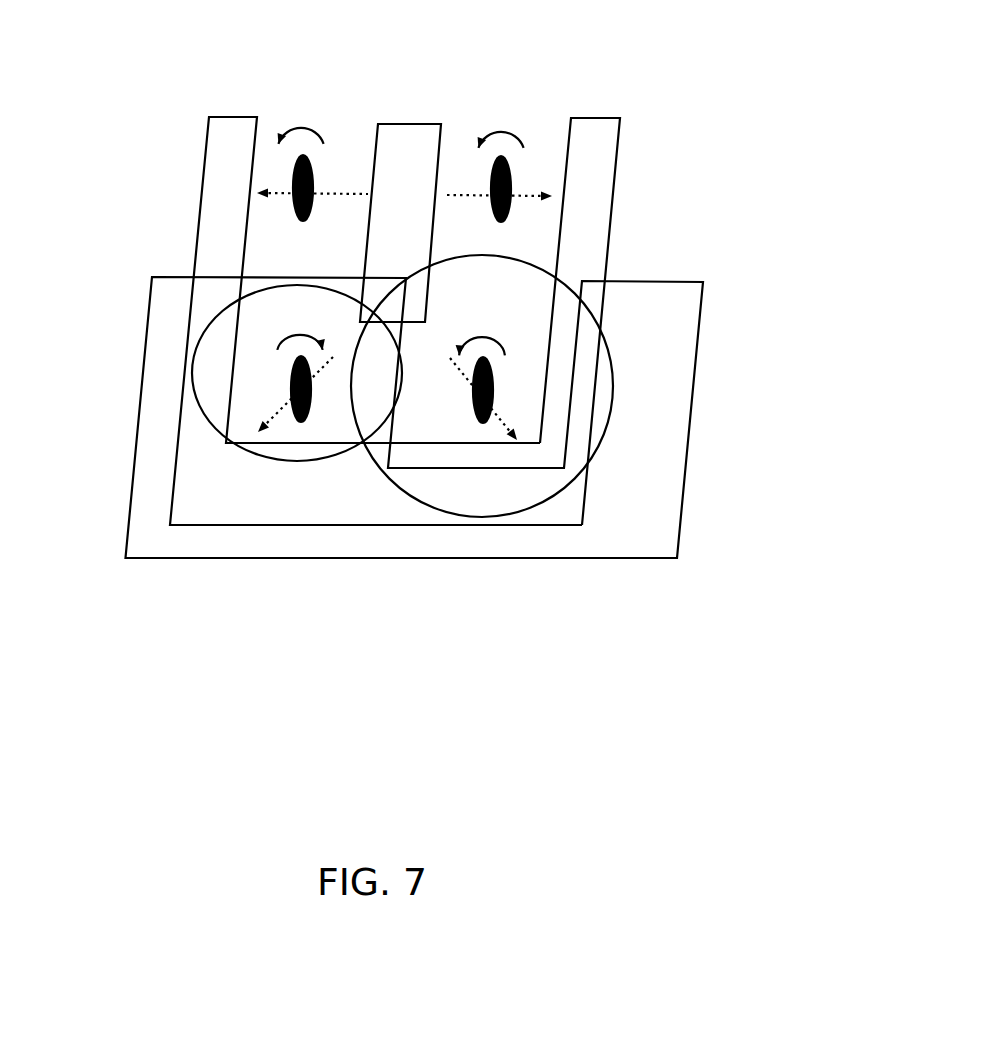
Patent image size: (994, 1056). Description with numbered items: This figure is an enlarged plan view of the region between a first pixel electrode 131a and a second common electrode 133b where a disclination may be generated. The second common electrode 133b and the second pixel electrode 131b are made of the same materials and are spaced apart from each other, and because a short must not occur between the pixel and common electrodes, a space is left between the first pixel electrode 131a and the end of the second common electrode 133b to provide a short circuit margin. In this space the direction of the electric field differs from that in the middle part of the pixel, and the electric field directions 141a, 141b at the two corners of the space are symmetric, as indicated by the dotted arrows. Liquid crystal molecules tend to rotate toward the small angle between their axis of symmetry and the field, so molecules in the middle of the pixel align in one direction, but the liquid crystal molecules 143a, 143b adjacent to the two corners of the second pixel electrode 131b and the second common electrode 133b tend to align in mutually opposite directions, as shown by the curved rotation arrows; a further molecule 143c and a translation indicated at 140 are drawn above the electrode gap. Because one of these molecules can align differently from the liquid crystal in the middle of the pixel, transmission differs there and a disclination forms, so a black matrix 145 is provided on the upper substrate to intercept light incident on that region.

The black matrix 145 is at (155, 560).
The first pixel electrode 131a is at (535, 517).
The second pixel electrode 131b is at (592, 230).
The second common electrode 133b is at (398, 148).
The translation movement 140 is at (527, 197).
The liquid crystal molecule 143a is at (293, 374).
The liquid crystal molecule 143b is at (493, 375).
The third rotary joint 143c is at (510, 172).
The electric field direction 141a is at (274, 412).
The electric field direction 141b is at (503, 420).